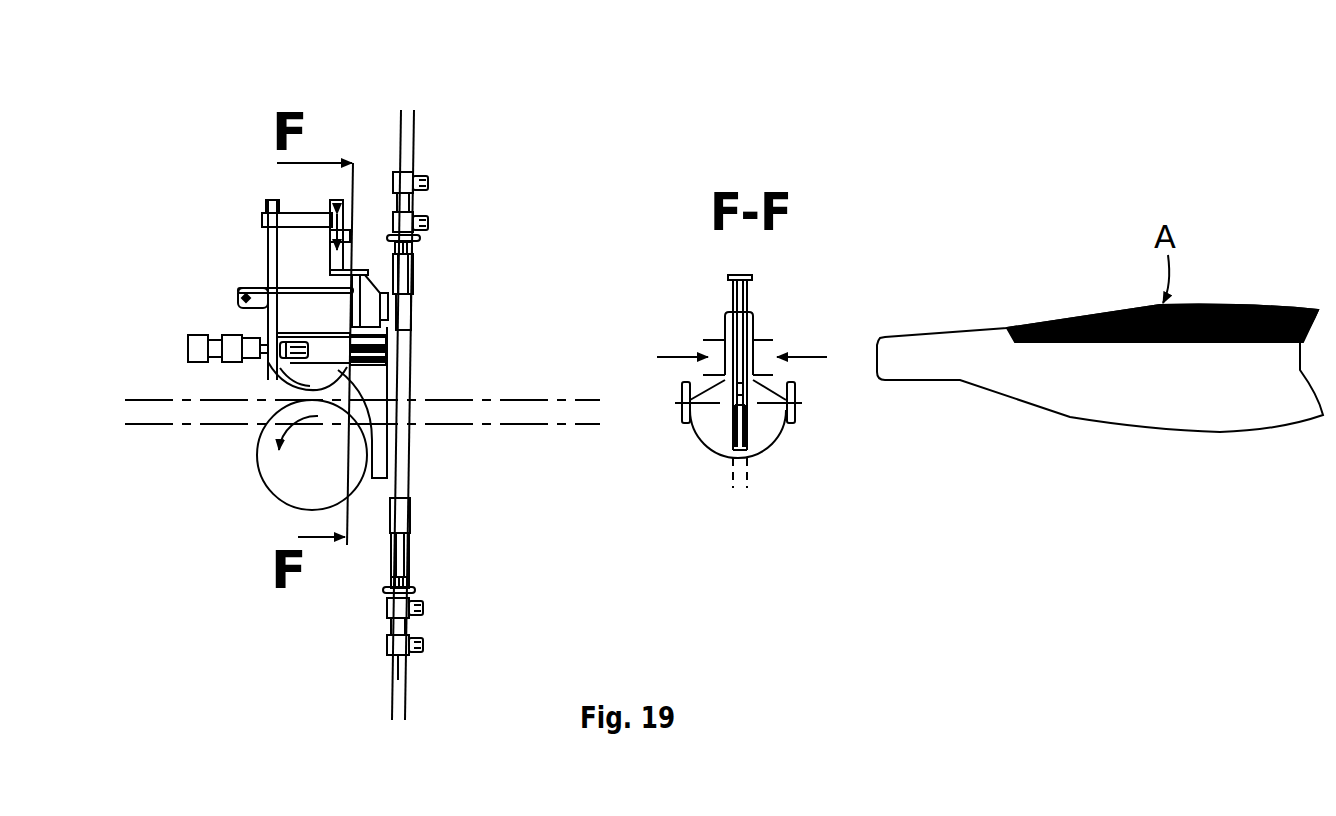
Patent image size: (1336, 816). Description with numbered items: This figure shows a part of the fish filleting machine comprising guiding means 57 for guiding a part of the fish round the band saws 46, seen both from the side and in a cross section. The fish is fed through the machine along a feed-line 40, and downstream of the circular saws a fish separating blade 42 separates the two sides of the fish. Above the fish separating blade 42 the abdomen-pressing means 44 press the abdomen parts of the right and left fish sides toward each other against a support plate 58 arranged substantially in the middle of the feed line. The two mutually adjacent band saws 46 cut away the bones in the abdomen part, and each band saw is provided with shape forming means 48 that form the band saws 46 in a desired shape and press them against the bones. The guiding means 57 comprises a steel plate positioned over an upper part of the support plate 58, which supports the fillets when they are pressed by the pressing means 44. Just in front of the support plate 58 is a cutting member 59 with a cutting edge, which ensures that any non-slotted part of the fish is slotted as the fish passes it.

The feed-line 40 is at (168, 408).
The fish separating blade 42 is at (375, 413).
The abdomen-pressing means 44 is at (333, 290).
The band saws 46 is at (403, 385).
The shape forming means 48 is at (388, 565).
The guiding means 57 is at (367, 290).
The support plate 58 is at (738, 310).
The cutting member 59 is at (278, 371).